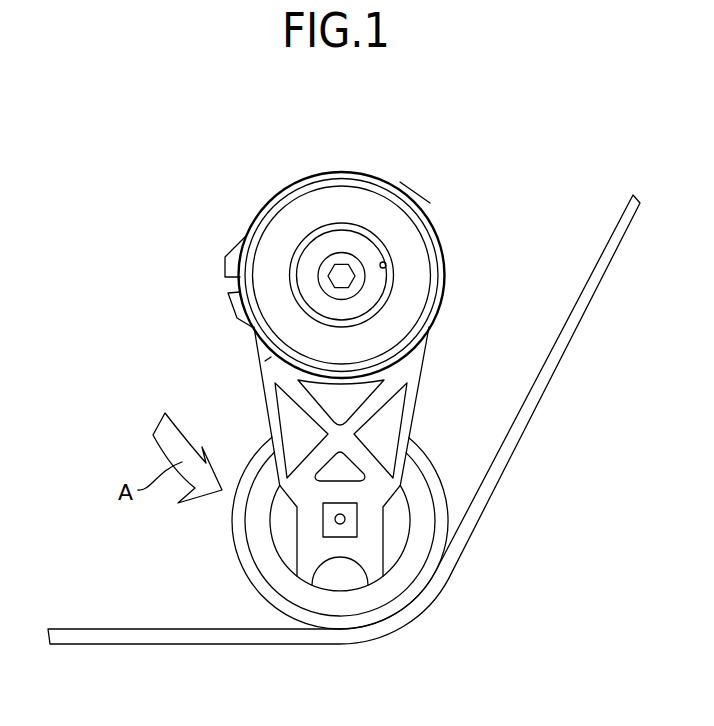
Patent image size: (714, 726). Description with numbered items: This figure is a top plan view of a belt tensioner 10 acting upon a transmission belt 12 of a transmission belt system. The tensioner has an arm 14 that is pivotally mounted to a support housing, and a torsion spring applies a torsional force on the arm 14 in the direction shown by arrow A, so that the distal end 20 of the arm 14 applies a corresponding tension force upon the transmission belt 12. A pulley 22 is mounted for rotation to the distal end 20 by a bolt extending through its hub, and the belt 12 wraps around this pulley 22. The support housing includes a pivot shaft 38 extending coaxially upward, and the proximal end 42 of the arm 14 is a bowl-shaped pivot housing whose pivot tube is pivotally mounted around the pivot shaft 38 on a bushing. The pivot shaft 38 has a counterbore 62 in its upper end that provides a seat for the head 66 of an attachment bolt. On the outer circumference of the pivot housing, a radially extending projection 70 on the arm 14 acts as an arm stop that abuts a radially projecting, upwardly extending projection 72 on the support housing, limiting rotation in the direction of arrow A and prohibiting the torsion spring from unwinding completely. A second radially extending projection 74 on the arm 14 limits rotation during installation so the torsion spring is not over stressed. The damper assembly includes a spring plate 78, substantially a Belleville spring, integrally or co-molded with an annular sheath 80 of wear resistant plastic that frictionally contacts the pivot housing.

The belt tensioner 10 is at (133, 322).
The transmission belt 12 is at (549, 366).
The arm 14 is at (408, 373).
The distal end 20 is at (240, 585).
The pulley 22 is at (424, 459).
The pivot shaft 38 is at (328, 224).
The proximal end 42 is at (445, 243).
The counterbore 62 is at (386, 262).
The head 66 is at (344, 270).
The projection 70 is at (224, 256).
The projection 72 is at (230, 308).
The second radially extending projection 74 is at (274, 356).
The spring plate 78 is at (295, 225).
The annular sheath 80 is at (258, 222).